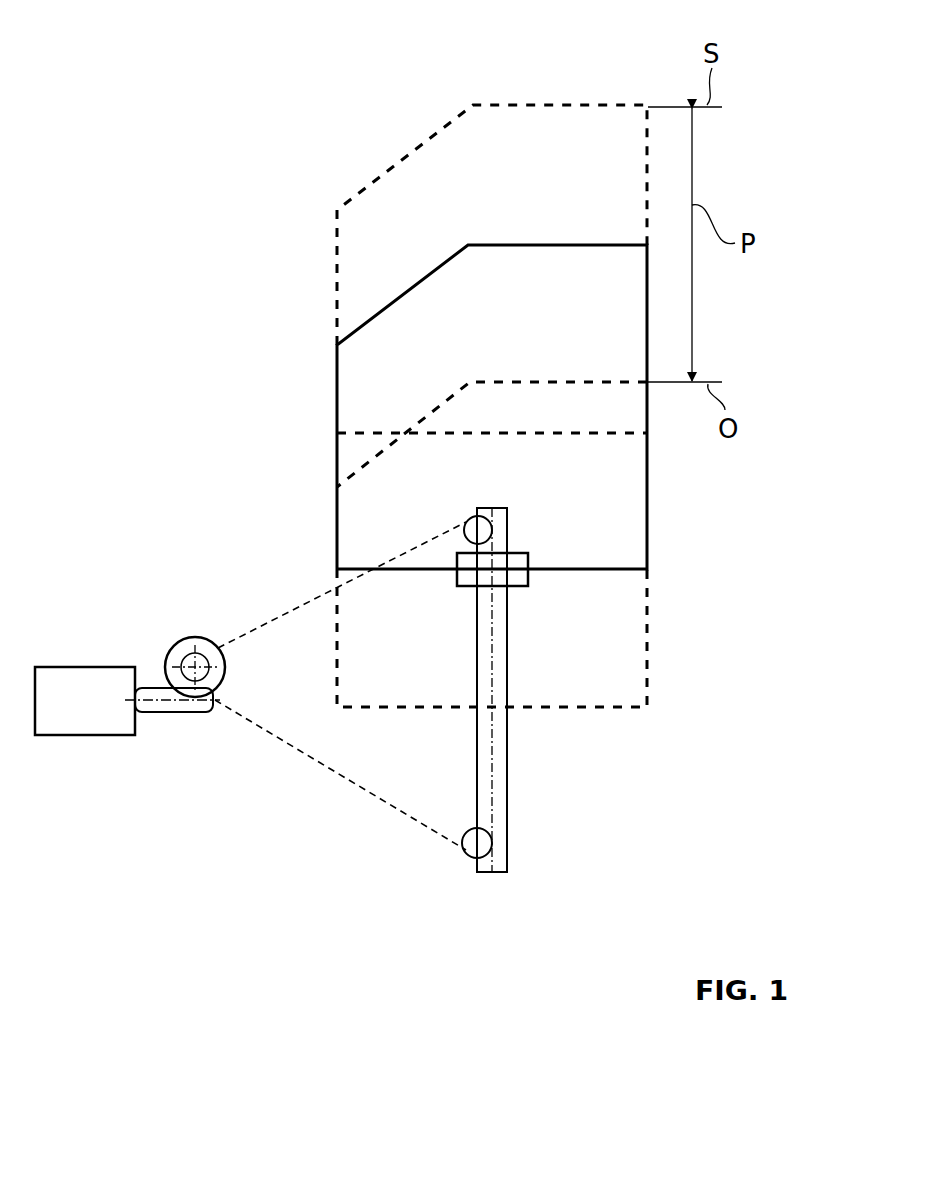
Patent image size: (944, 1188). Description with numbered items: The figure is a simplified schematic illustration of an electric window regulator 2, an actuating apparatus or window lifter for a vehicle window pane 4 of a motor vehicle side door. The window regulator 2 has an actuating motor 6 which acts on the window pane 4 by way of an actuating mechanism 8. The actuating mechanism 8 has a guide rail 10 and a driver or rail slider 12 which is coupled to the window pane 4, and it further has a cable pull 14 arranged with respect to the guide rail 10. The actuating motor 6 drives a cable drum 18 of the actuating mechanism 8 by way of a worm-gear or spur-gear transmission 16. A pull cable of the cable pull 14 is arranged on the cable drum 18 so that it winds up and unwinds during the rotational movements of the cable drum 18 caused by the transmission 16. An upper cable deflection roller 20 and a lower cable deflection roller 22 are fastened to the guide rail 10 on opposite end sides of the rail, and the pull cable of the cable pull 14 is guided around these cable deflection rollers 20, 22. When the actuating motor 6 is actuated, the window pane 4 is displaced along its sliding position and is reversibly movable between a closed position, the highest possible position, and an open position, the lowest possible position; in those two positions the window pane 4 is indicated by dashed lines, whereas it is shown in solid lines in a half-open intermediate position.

The electric window regulator 2 is at (142, 412).
The window pane 4 is at (355, 270).
The actuating motor 6 is at (95, 713).
The actuating mechanism 8 is at (517, 745).
The guide rail 10 is at (507, 807).
The rail slider 12 is at (528, 578).
The cable pull 14 is at (357, 787).
The transmission 16 is at (185, 716).
The cable drum 18 is at (188, 660).
The upper cable deflection roller 20 is at (480, 530).
The lower cable deflection roller 22 is at (475, 855).